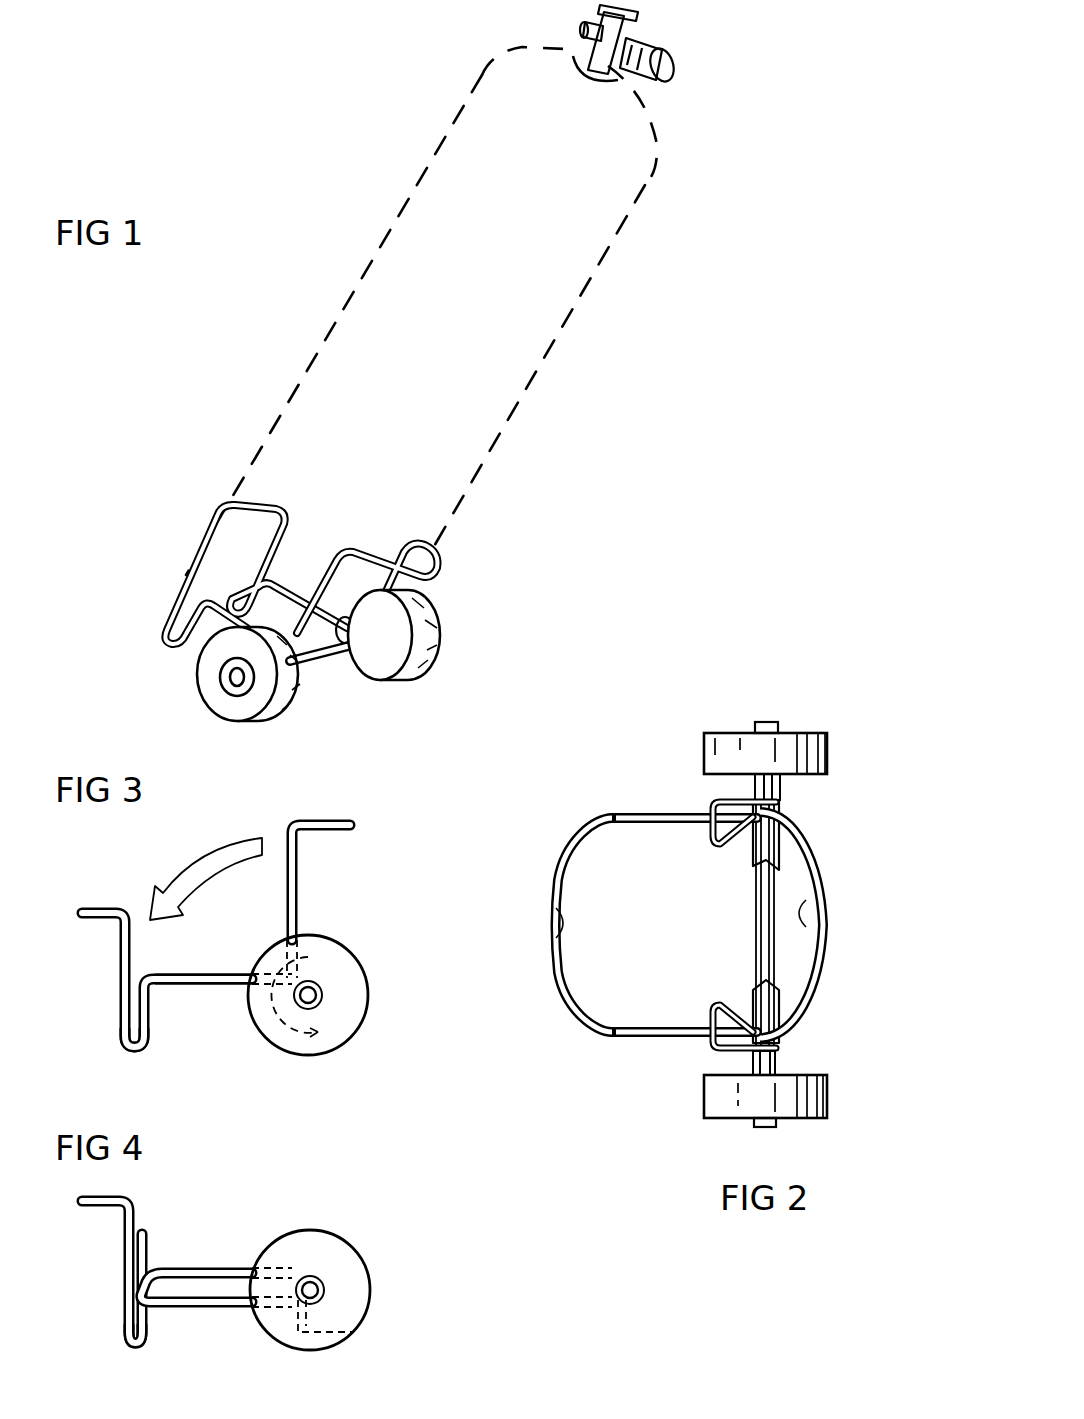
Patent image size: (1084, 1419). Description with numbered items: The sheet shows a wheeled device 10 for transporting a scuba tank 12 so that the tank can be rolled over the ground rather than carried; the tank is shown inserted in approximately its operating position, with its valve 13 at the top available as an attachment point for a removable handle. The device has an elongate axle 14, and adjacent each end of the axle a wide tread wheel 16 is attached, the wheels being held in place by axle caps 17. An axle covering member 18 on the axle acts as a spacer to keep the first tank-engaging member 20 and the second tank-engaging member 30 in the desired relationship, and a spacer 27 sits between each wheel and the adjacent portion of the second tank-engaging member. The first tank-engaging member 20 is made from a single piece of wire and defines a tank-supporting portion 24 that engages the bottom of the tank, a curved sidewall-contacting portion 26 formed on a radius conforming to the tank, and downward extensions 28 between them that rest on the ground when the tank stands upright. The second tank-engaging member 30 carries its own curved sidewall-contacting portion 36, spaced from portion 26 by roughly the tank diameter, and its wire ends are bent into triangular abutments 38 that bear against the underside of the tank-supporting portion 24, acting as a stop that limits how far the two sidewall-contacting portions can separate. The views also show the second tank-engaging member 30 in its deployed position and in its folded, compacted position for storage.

In FIG. 1, the wheeled device 10 is at (160, 566).
In FIG. 1, the scuba tank 12 is at (545, 352).
In FIG. 1, the valve 13 is at (642, 32).
In FIG. 2, the elongate axle 14 is at (760, 935).
In FIG. 1, the wide tread wheel 16 is at (432, 634).
In FIG. 3, the wide tread wheel 16 is at (350, 1024).
In FIG. 4, the wide tread wheel 16 is at (345, 1257).
In FIG. 2, the wide tread wheel 16 is at (828, 1097).
In FIG. 1, the axle cap 17 is at (234, 690).
In FIG. 2, the axle cap 17 is at (766, 1130).
In FIG. 1, the axle covering member 18 is at (328, 652).
In FIG. 2, the axle covering member 18 is at (778, 990).
In FIG. 1, the first tank-engaging member 20 is at (219, 508).
In FIG. 3, the first tank-engaging member 20 is at (120, 962).
In FIG. 4, the first tank-engaging member 20 is at (124, 1240).
In FIG. 2, the first tank-engaging member 20 is at (574, 998).
In FIG. 3, the tank-supporting portion 24 is at (215, 986).
In FIG. 2, the tank-supporting portion 24 is at (670, 1036).
In FIG. 2, the curved sidewall-contacting portion 26 is at (556, 913).
In FIG. 2, the spacer 27 is at (783, 1056).
In FIG. 3, the downward extensions 28 is at (119, 1029).
In FIG. 4, the downward extensions 28 is at (124, 1325).
In FIG. 2, the downward extensions 28 is at (622, 1038).
In FIG. 1, the second tank-engaging member 30 is at (430, 573).
In FIG. 3, the second tank-engaging member 30 is at (296, 872).
In FIG. 4, the second tank-engaging member 30 is at (222, 1308).
In FIG. 2, the second tank-engaging member 30 is at (816, 862).
In FIG. 2, the curved sidewall-contacting portion 36 is at (818, 913).
In FIG. 4, the abutments 38 is at (357, 1332).
In FIG. 2, the abutments 38 is at (720, 1008).